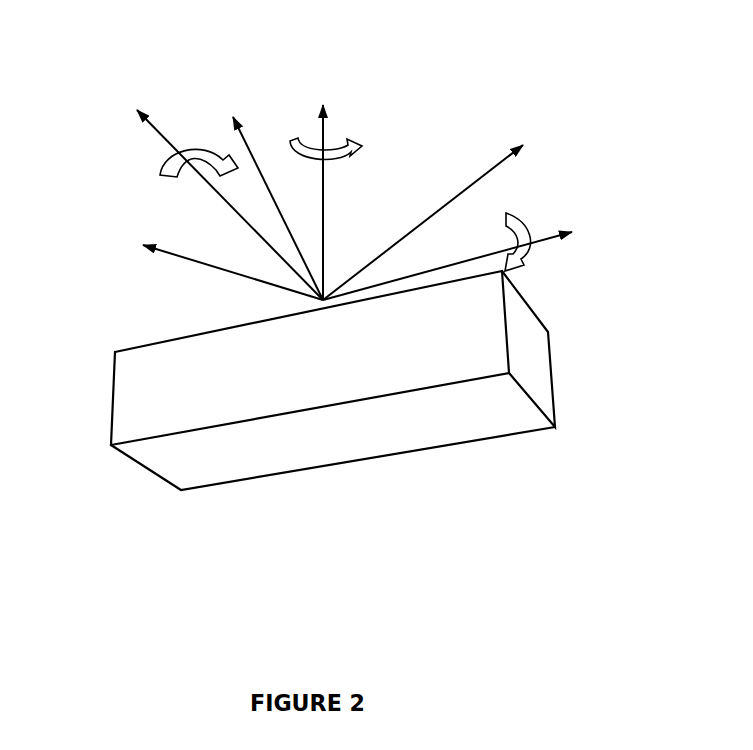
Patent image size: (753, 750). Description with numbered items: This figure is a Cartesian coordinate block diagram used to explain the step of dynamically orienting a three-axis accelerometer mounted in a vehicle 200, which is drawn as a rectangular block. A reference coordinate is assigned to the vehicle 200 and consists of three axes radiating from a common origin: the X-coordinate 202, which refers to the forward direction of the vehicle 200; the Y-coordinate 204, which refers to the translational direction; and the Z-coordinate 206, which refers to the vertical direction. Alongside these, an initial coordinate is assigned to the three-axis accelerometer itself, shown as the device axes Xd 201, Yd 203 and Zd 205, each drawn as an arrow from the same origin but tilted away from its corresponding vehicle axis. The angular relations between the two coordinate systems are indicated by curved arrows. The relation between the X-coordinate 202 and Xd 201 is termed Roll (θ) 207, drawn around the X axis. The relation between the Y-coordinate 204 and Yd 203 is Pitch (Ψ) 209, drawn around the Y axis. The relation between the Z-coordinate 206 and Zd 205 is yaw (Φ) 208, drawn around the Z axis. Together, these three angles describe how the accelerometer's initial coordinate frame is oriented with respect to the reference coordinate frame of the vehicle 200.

The vehicle 200 is at (107, 408).
The Xd coordinate 201 is at (475, 218).
The X-coordinate 202 is at (493, 259).
The Yd coordinate 203 is at (186, 265).
The Y-coordinate 204 is at (206, 187).
The Zd coordinate 205 is at (262, 196).
The Z-coordinate 206 is at (348, 187).
The Roll (θ) 207 is at (565, 262).
The yaw (Φ) 208 is at (374, 153).
The Pitch (Ψ) 209 is at (155, 161).